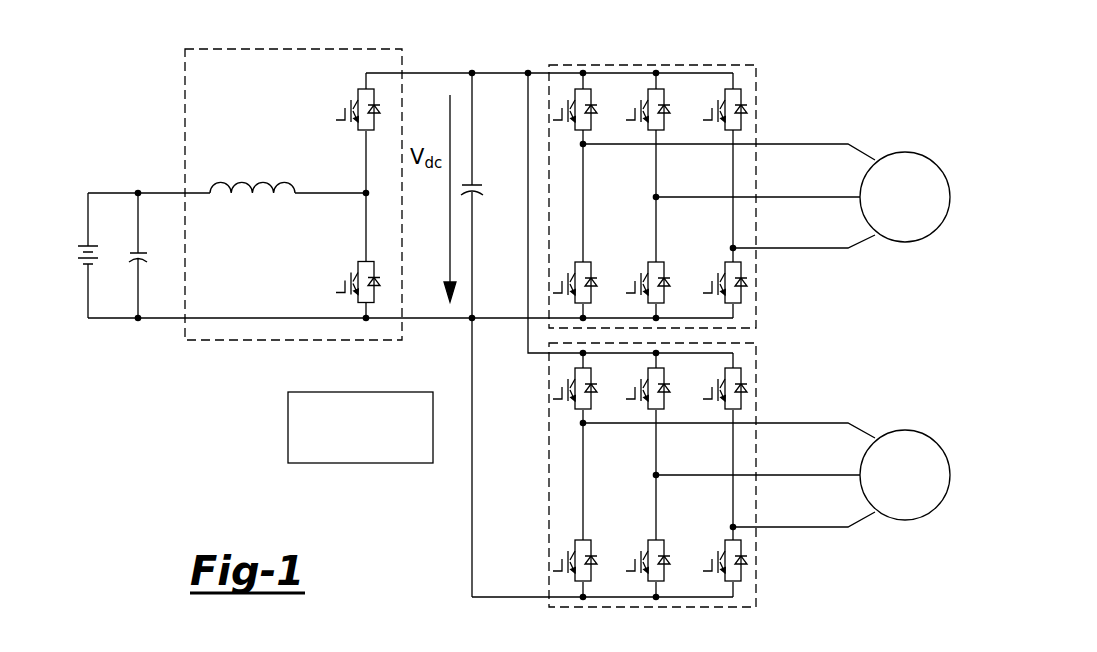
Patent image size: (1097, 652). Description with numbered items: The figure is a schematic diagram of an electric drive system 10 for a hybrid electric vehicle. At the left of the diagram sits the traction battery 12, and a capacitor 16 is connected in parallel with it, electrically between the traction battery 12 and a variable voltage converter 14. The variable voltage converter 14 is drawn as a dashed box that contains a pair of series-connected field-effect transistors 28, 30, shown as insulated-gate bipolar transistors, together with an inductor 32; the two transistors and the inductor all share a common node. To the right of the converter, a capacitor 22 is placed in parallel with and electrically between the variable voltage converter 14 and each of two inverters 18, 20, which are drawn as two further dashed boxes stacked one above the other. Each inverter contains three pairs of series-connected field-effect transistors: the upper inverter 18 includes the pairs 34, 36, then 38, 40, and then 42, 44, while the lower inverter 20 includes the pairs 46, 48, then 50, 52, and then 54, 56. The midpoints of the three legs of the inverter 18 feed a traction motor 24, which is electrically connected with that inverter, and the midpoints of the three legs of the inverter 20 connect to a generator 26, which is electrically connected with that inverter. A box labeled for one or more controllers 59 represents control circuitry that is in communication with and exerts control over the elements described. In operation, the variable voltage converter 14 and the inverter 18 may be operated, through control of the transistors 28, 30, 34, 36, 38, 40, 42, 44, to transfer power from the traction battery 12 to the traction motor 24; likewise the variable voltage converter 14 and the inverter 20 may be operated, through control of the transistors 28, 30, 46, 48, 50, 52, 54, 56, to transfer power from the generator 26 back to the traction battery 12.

The electric drive system 10 is at (250, 374).
The traction battery 12 is at (84, 245).
The variable voltage converter 14 is at (343, 48).
The capacitor 16 is at (140, 252).
The inverter 18 is at (737, 65).
The inverter 20 is at (757, 392).
The capacitor 22 is at (476, 184).
The traction motor 24 is at (905, 152).
The generator 26 is at (905, 430).
The field-effect transistor 28 is at (362, 89).
The field-effect transistor 30 is at (361, 262).
The inductor 32 is at (262, 183).
The field-effect transistor 34 is at (587, 89).
The field-effect transistor 36 is at (587, 262).
The field-effect transistor 38 is at (660, 89).
The field-effect transistor 40 is at (660, 262).
The field-effect transistor 42 is at (741, 90).
The field-effect transistor 44 is at (738, 303).
The field-effect transistor 46 is at (578, 368).
The field-effect transistor 48 is at (587, 540).
The field-effect transistor 50 is at (652, 368).
The field-effect transistor 52 is at (660, 540).
The field-effect transistor 54 is at (740, 361).
The field-effect transistor 56 is at (738, 582).
The controllers 59 is at (382, 392).